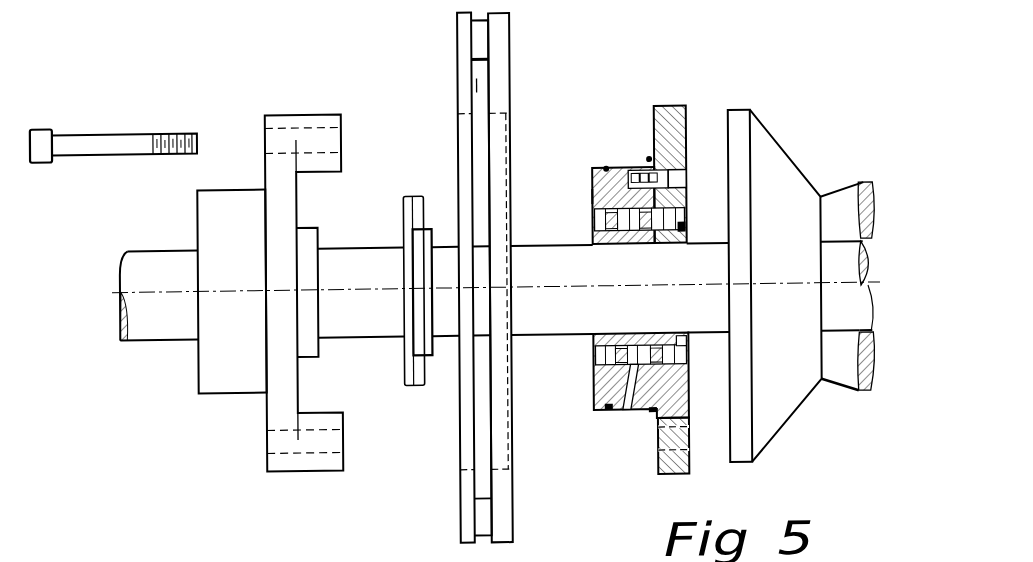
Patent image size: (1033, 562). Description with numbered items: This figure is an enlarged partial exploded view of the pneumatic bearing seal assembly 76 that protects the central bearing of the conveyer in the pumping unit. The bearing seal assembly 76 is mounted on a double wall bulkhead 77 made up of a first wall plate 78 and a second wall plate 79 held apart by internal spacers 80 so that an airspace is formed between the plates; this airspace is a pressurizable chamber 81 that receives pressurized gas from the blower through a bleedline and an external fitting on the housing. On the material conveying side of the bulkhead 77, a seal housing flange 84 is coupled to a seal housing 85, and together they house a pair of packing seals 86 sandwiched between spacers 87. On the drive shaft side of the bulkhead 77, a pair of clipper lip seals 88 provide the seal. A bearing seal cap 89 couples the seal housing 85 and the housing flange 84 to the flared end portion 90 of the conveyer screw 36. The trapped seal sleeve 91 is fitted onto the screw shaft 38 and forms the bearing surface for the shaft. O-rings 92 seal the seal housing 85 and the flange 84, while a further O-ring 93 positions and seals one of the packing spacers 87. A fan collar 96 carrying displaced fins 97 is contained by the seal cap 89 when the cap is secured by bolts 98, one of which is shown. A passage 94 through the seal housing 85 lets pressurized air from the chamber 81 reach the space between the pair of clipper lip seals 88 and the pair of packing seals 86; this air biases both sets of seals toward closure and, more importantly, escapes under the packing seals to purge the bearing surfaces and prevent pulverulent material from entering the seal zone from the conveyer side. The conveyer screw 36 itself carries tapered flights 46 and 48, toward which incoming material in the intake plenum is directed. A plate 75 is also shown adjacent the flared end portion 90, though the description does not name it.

The conveyer screw 36 is at (874, 340).
The screw shaft 38 is at (556, 337).
The tapered flight 46 is at (840, 200).
The tapered flight 48 is at (853, 388).
The mounting plate 75 is at (748, 112).
The bearing seal assembly 76 is at (657, 253).
The double wall bulkhead 77 is at (487, 273).
The first wall plate 78 is at (459, 40).
The second wall plate 79 is at (505, 32).
The internal spacers 80 is at (476, 45).
The pressurizable chamber 81 is at (478, 85).
The seal housing flange 84 is at (668, 108).
The seal housing 85 is at (593, 170).
The packing seals 86 is at (688, 182).
The spacers 87 is at (688, 226).
The clipper lip seals 88 is at (593, 196).
The bearing seal cap 89 is at (305, 119).
The flared end portion 90 is at (790, 162).
The trapped seal sleeve 91 is at (594, 236).
The O-rings 92 is at (650, 161).
The O-ring 93 is at (692, 347).
The passage 94 is at (633, 414).
The fan collar 96 is at (405, 357).
The displaced fins 97 is at (414, 196).
The bolts 98 is at (149, 129).